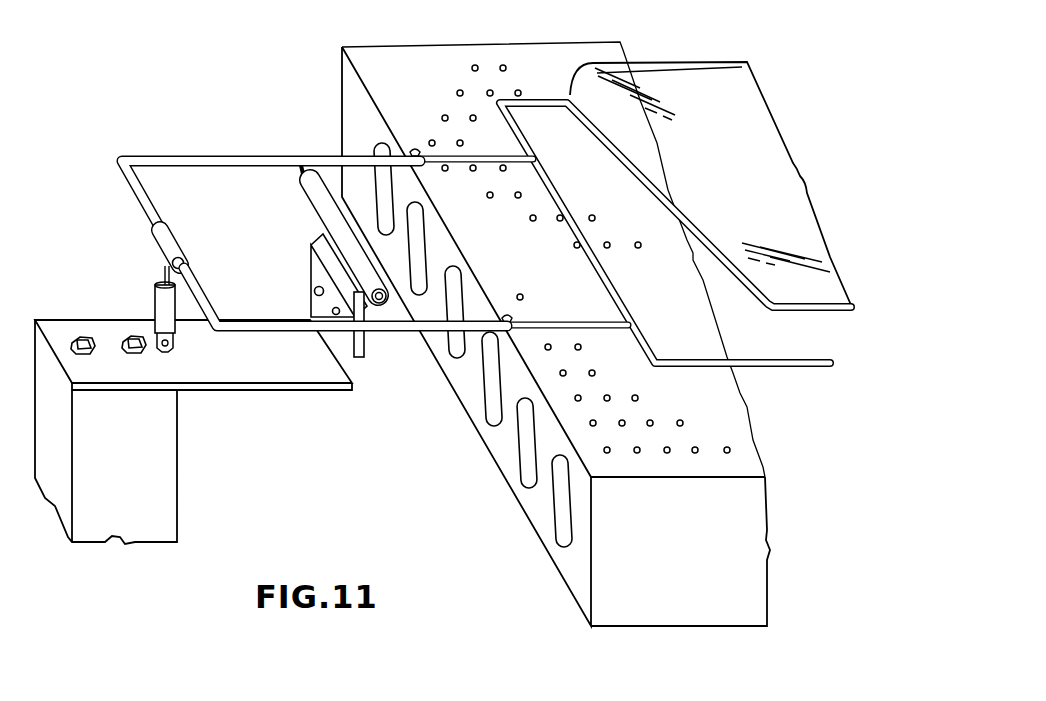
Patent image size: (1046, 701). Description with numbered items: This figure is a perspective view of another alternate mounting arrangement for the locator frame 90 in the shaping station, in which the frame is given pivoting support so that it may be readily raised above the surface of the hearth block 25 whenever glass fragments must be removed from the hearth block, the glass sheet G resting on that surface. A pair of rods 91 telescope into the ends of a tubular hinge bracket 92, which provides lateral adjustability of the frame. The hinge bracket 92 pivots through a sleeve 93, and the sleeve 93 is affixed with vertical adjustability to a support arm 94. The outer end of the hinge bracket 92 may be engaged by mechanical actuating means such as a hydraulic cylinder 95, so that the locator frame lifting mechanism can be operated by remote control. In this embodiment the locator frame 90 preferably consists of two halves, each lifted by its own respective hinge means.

The hearth block 25 is at (342, 70).
The locator frame 90 is at (537, 97).
The rods 91 is at (462, 167).
The tubular hinge bracket 92 is at (212, 153).
The sleeve 93 is at (300, 204).
The support arm 94 is at (247, 384).
The hydraulic cylinder 95 is at (152, 300).
The glass sheet G is at (712, 68).